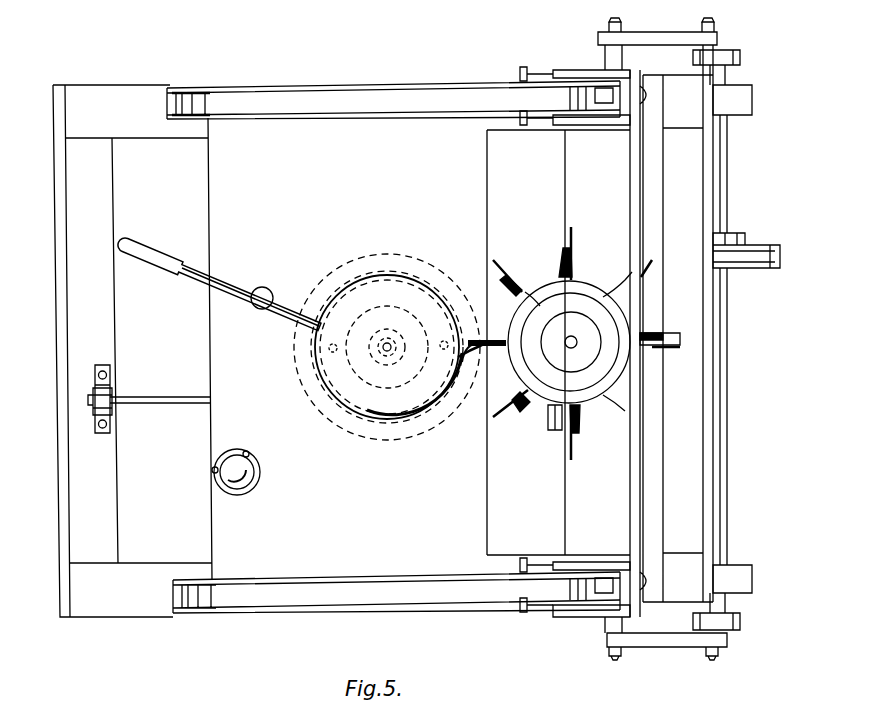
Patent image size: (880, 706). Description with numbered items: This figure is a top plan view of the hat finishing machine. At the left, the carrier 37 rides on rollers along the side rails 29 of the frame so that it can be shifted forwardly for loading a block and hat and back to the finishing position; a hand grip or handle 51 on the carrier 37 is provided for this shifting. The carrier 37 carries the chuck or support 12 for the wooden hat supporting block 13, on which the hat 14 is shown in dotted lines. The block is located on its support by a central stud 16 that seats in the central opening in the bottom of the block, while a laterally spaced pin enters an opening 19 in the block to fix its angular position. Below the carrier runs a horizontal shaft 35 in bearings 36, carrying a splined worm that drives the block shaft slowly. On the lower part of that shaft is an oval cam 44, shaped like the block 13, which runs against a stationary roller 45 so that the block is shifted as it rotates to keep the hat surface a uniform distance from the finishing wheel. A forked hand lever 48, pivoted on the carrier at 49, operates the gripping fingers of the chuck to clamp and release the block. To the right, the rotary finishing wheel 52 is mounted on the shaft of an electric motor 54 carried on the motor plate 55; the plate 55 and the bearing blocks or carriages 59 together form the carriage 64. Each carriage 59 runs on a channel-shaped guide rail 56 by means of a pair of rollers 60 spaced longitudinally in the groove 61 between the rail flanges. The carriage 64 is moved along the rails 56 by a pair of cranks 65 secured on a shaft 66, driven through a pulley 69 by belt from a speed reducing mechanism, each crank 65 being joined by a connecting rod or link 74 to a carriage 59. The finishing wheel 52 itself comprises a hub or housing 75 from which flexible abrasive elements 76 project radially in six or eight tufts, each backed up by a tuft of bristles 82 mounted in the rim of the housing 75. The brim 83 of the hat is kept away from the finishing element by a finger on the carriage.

The chuck or support 12 is at (310, 365).
The hat supporting block 13 is at (327, 385).
The hat 14 is at (346, 408).
The central stud 16 is at (352, 442).
The opening 19 is at (442, 350).
The side rails 29 is at (172, 72).
The horizontal shaft 35 is at (174, 397).
The bearings 36 is at (94, 432).
The carrier 37 is at (213, 538).
The oval cam 44 is at (384, 272).
The stationary roller 45 is at (482, 300).
The forked hand lever 48 is at (192, 286).
The pivot 49 is at (256, 312).
The hand grip or handle 51 is at (240, 452).
The rotary finishing wheel 52 is at (529, 428).
The electric motor 54 is at (580, 298).
The motor plate 55 is at (633, 490).
The side guide rails 56 is at (473, 80).
The carriages 59 is at (575, 69).
The rollers 60 is at (614, 108).
The groove 61 is at (174, 99).
The carriage 64 is at (662, 455).
The cranks 65 is at (722, 55).
The shaft 66 is at (729, 340).
The pulley 69 is at (767, 244).
The connecting rod or link 74 is at (663, 27).
The hub or housing 75 is at (535, 292).
The flexible abrasive elements 76 is at (575, 243).
The tuft of bristles 82 is at (658, 338).
The brim 83 is at (384, 442).